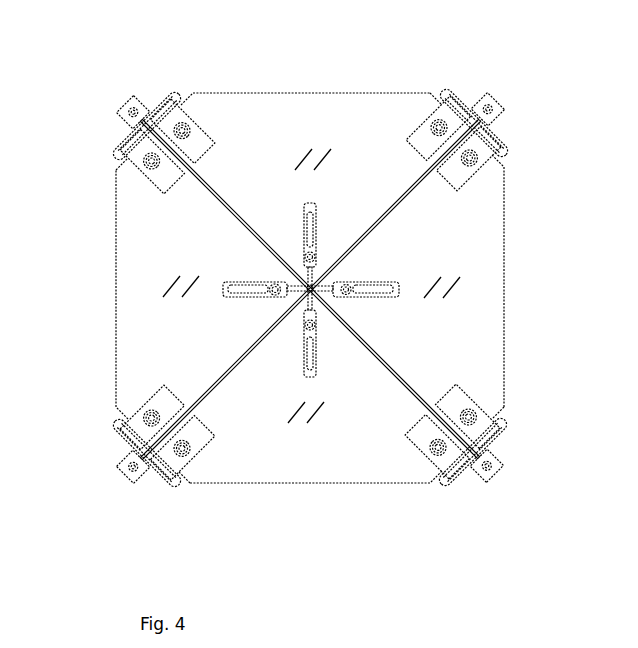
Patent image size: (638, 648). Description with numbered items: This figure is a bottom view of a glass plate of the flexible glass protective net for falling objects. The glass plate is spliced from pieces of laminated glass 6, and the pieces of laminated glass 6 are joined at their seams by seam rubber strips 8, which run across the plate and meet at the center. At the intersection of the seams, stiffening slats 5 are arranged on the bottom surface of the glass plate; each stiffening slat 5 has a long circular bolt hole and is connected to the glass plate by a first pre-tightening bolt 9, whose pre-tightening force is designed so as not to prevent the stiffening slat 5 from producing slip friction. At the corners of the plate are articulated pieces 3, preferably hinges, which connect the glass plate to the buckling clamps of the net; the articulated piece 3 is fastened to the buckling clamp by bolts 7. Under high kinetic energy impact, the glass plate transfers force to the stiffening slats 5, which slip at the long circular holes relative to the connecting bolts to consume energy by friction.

The articulated piece 3 is at (445, 120).
The stiffening slat 5 is at (223, 290).
The laminated glass 6 is at (485, 298).
The bolt 7 is at (477, 162).
The seam rubber strip 8 is at (215, 195).
The first pre-tightening bolt 9 is at (275, 292).